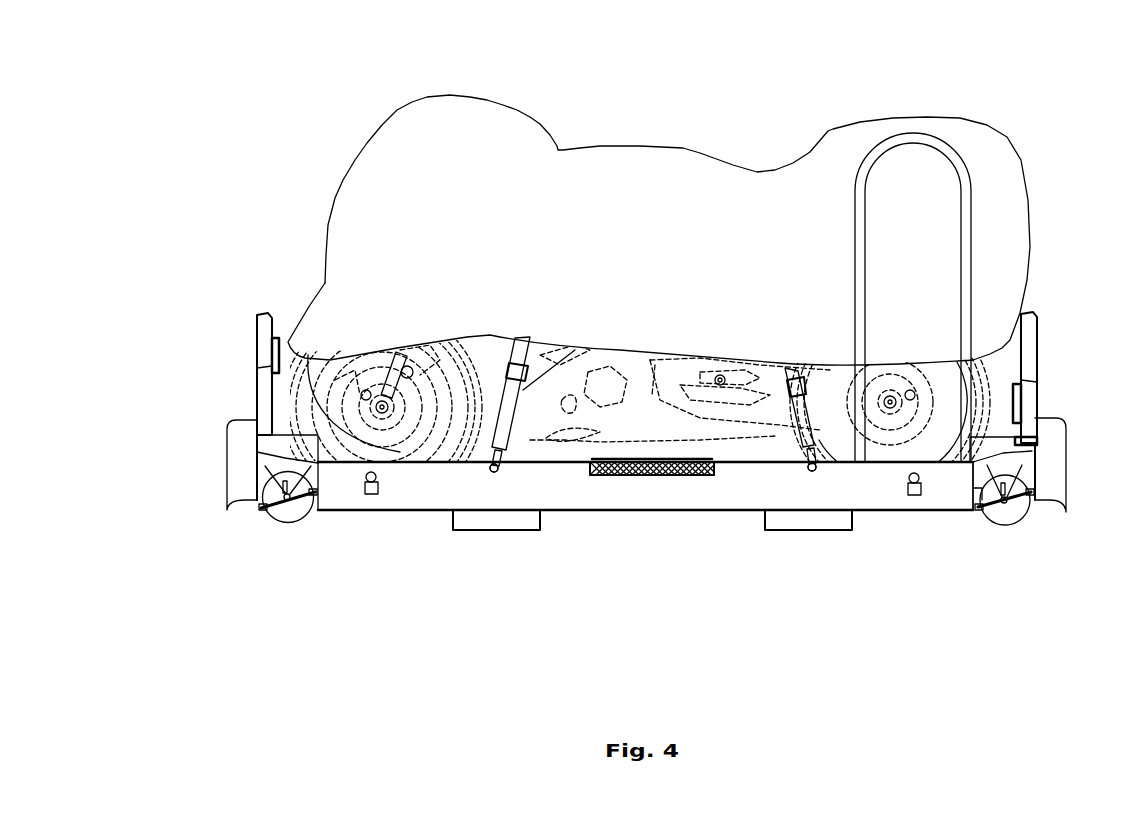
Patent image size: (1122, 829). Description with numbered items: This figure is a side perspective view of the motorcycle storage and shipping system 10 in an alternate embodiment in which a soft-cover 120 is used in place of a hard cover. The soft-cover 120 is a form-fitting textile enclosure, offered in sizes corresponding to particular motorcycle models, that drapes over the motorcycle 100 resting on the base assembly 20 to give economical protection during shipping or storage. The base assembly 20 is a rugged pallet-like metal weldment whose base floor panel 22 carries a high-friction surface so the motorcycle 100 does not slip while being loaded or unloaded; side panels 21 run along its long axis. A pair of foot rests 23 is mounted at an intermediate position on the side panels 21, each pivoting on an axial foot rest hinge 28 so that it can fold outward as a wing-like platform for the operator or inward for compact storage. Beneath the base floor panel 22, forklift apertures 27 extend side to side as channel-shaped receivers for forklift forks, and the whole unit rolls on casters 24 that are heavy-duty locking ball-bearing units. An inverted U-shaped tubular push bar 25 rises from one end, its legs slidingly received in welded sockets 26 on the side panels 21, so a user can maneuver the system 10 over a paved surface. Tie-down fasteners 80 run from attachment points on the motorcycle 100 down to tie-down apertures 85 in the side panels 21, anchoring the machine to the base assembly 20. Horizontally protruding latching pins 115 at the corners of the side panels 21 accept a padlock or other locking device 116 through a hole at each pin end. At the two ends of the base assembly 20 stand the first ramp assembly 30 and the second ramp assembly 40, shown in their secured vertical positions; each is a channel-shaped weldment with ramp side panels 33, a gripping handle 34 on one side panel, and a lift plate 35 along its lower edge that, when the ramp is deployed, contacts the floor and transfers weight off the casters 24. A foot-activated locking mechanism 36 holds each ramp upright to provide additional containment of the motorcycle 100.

The system 10 is at (238, 122).
The base assembly 20 is at (632, 518).
The side panels 21 is at (762, 478).
The base floor panel 22 is at (577, 448).
The foot rests 23 is at (678, 478).
The casters 24 is at (270, 495).
The push bar 25 is at (965, 222).
The sockets 26 is at (307, 513).
The forklift apertures 27 is at (472, 518).
The foot rest hinge 28 is at (650, 478).
The first ramp assembly 30 is at (1060, 388).
The ramp side panels 33 is at (265, 378).
The handle 34 is at (276, 340).
The lift plate 35 is at (247, 472).
The locking mechanism 36 is at (1038, 444).
The second ramp assembly 40 is at (222, 380).
The tie-down fasteners 80 is at (781, 377).
The tie-down apertures 85 is at (497, 475).
The motorcycle 100 is at (303, 357).
The latching pins 115 is at (367, 482).
The locking device 116 is at (377, 494).
The soft-cover 120 is at (640, 158).